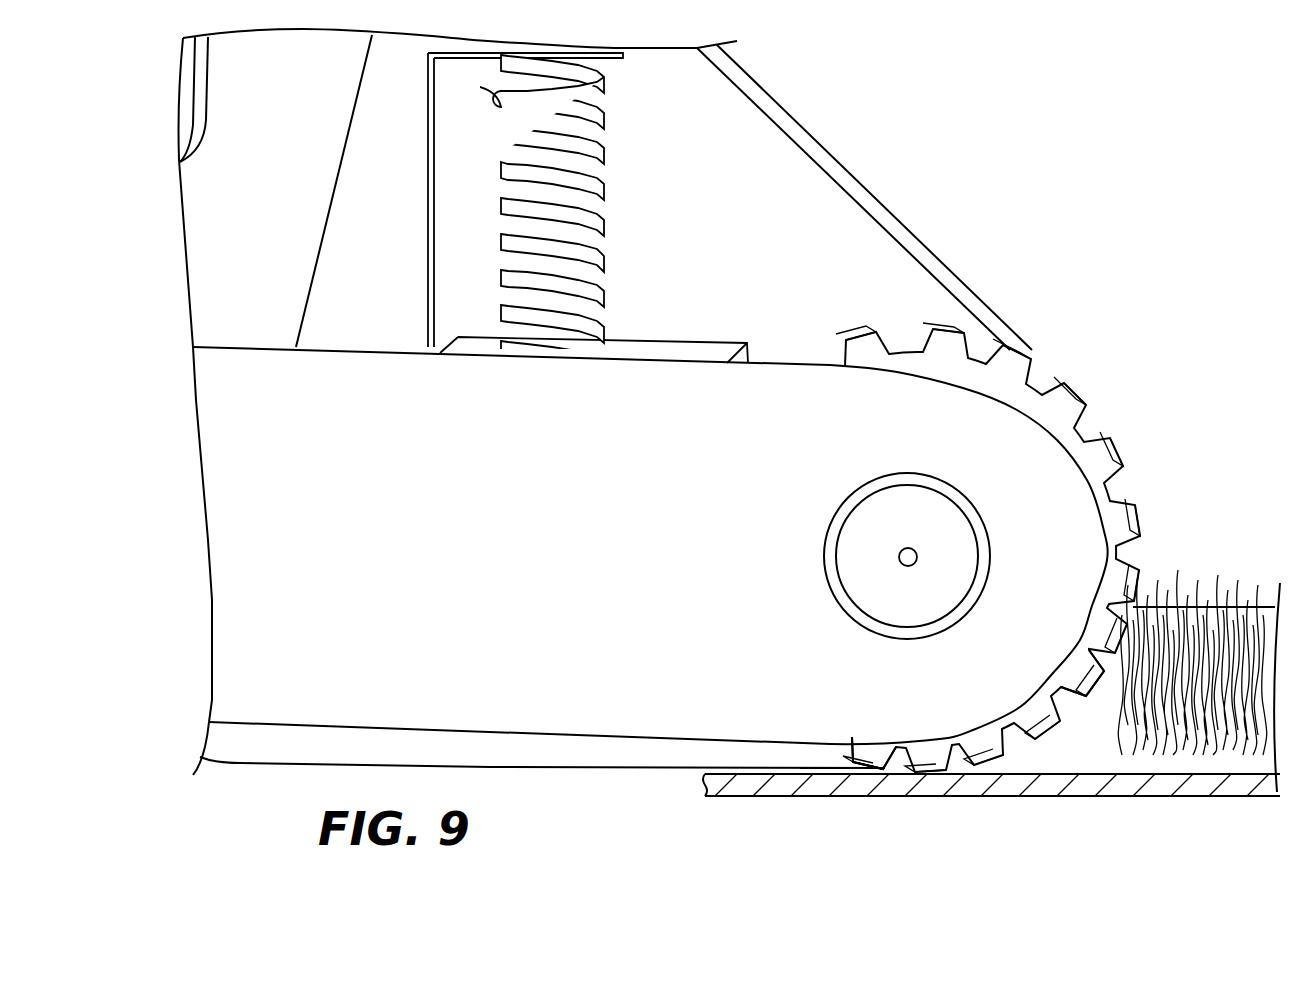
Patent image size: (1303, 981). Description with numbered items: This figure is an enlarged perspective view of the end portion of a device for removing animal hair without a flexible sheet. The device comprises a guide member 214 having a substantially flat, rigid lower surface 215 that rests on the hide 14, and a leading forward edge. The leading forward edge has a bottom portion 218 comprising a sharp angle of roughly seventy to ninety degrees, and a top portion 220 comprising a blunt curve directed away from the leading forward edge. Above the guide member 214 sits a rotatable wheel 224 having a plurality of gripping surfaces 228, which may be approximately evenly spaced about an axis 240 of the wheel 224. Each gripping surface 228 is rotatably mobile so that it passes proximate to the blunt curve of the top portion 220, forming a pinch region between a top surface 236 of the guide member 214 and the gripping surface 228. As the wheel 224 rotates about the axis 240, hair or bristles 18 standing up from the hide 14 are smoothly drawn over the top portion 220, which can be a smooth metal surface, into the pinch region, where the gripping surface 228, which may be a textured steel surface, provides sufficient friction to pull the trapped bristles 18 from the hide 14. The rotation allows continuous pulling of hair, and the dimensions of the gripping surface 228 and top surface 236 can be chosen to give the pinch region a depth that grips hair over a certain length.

The hide 14 is at (1167, 792).
The bristles 18 is at (1267, 590).
The guide member 214 is at (772, 755).
The lower surface 215 is at (752, 775).
The bottom portion 218 is at (883, 773).
The top portion 220 is at (851, 747).
The rotatable wheel 224 is at (1140, 463).
The gripping surface 228 is at (1053, 670).
The top surface 236 is at (826, 768).
The axis 240 is at (899, 549).